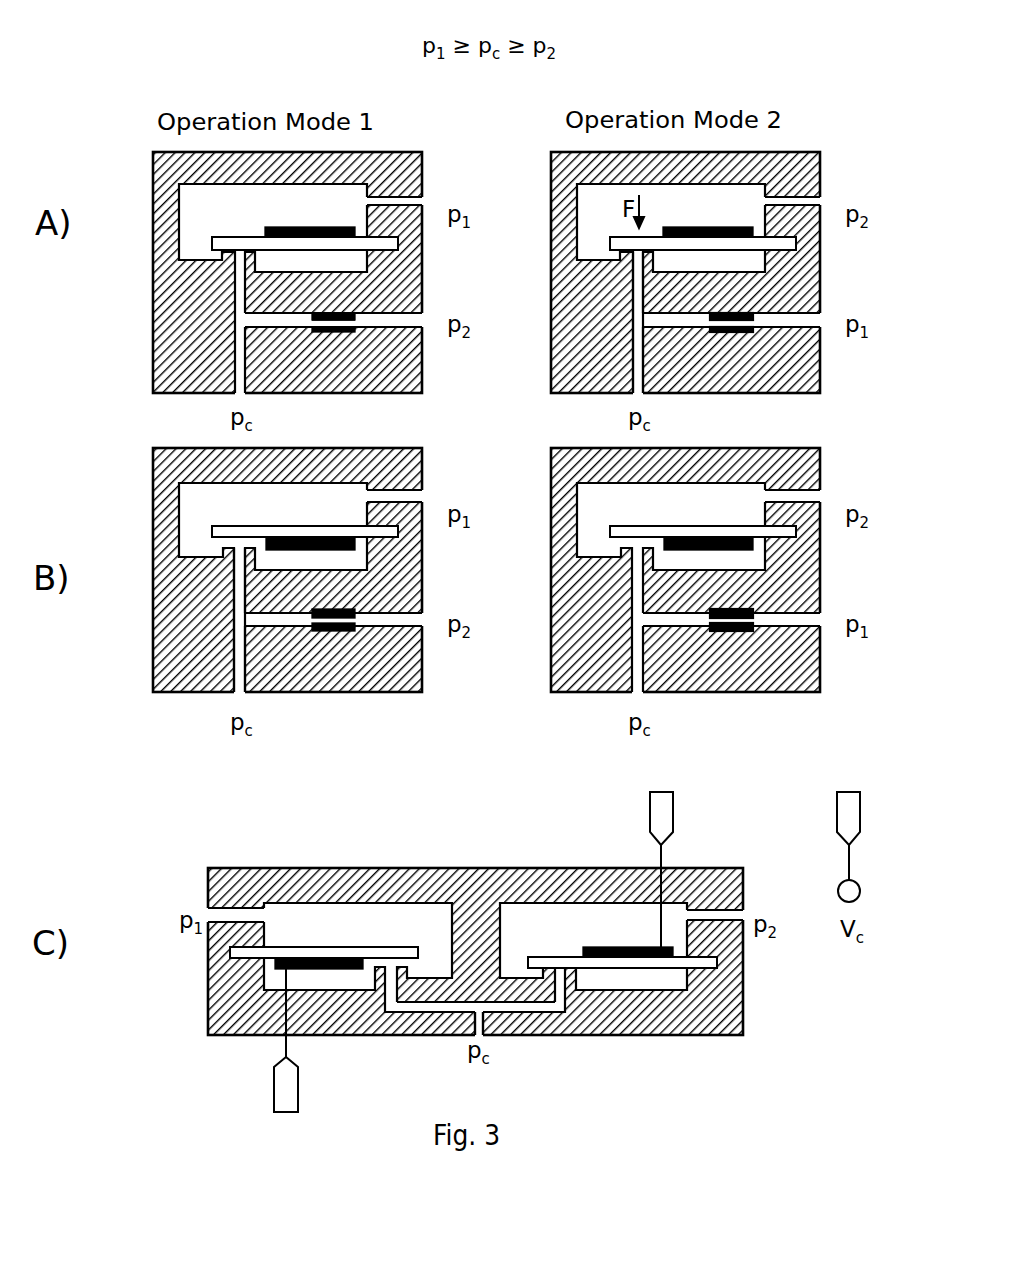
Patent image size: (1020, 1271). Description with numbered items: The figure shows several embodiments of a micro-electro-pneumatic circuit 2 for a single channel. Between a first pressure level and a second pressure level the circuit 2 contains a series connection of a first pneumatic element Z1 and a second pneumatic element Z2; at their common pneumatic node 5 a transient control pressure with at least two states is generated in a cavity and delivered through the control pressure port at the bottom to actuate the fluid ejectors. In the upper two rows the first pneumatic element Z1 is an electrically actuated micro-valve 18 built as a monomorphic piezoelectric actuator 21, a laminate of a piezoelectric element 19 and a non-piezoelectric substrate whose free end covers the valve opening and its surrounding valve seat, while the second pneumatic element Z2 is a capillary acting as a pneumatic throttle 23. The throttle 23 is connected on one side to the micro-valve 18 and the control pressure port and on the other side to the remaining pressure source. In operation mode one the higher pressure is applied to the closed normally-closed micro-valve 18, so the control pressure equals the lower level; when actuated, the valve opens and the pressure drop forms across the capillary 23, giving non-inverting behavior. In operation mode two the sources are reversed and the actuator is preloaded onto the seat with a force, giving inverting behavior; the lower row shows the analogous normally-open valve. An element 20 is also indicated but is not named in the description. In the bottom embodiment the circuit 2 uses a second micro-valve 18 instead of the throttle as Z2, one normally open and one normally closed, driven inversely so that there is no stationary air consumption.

The micro-electro-pneumatic circuit 2 is at (140, 150).
The common pneumatic node 5 is at (643, 317).
The micro-valve 18 is at (240, 230).
The piezoelectric element 19 is at (307, 227).
The plate bearing edge 20 is at (222, 253).
The monomorphic piezoelectric actuator 21 is at (362, 238).
The pneumatic throttle (capillary) 23 is at (353, 313).
The first pneumatic element (impedance) Z1 is at (235, 251).
The second pneumatic element (impedance) Z2 is at (320, 333).